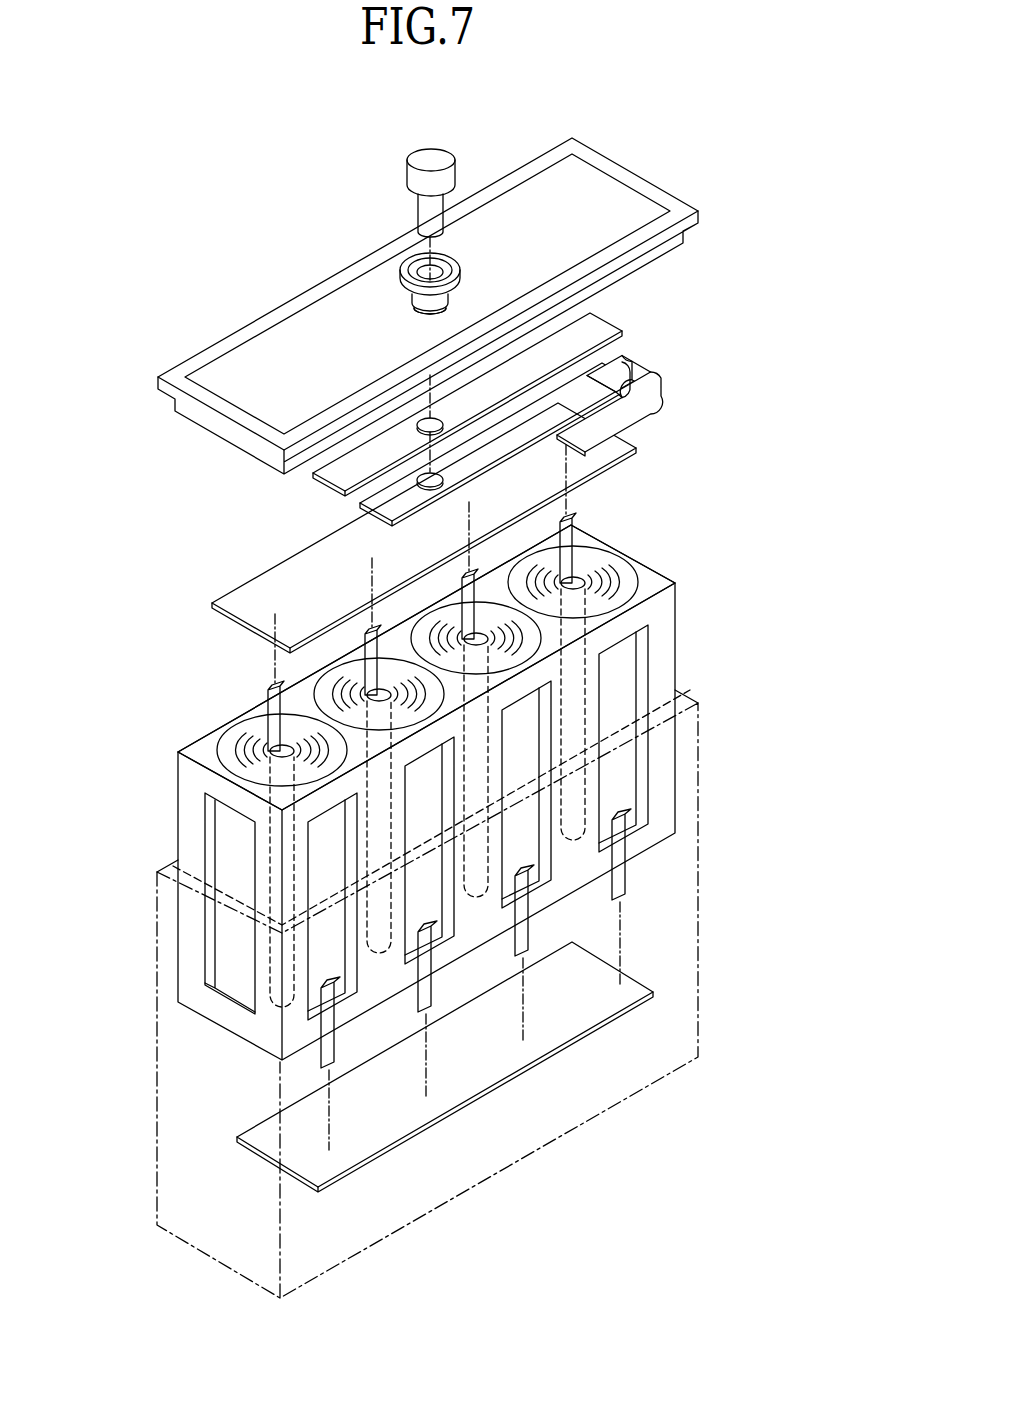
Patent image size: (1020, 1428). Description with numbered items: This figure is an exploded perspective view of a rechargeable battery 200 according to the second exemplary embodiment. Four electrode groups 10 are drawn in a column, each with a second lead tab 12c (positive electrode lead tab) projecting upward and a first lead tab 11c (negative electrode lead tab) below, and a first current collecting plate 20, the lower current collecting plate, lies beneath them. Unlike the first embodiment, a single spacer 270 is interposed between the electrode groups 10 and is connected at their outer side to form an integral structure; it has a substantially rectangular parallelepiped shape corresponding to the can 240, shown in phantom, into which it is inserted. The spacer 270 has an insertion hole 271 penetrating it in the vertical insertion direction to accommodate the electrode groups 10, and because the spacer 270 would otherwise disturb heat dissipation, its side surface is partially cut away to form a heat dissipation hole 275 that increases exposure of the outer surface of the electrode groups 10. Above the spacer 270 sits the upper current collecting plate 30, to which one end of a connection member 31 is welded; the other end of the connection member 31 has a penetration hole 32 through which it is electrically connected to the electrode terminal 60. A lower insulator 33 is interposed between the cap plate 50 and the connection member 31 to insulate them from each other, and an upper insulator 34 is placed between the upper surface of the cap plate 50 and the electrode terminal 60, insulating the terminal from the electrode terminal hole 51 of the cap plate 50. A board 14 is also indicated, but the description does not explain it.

The rechargeable battery 200 is at (268, 109).
The cap plate 50 is at (598, 190).
The electrode terminal 60 is at (417, 157).
The upper insulator 34 is at (402, 266).
The electrode terminal hole 51 is at (417, 308).
The lower insulator 33 is at (333, 478).
The penetration hole 32 is at (447, 470).
The upper current collecting plate 30 is at (607, 453).
The connection member 31 is at (630, 367).
The spacer 270 is at (188, 805).
The insertion hole 271 is at (240, 762).
The electrode groups 10 is at (518, 722).
The heat dissipation hole 275 is at (448, 907).
The second lead tab 12c is at (268, 693).
The first lead tab 11c is at (625, 880).
The first current collecting plate 20 is at (590, 1010).
The can 240 is at (702, 962).
The circuit board 14 is at (272, 898).